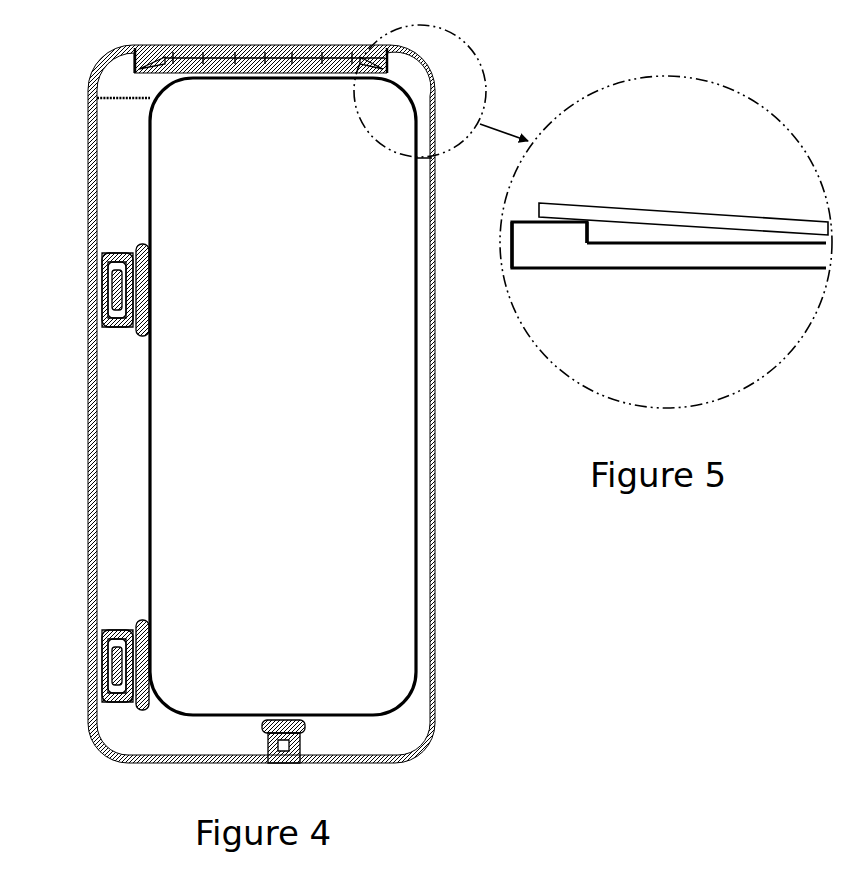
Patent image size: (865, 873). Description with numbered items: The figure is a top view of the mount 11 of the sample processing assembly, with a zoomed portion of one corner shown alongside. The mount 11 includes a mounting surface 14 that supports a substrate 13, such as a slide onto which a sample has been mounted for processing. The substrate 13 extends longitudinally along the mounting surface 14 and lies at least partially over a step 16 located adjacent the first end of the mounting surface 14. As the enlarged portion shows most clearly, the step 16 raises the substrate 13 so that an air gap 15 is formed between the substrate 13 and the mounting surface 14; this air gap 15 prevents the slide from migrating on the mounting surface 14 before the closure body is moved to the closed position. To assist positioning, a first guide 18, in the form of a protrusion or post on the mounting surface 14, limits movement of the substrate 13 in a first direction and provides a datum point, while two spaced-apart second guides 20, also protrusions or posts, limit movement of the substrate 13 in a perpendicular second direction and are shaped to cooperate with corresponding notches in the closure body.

In FIG. 4, the mount 11 is at (77, 120).
In FIG. 4, the substrate 13 is at (298, 321).
In FIG. 5, the substrate 13 is at (636, 207).
In FIG. 4, the mounting surface 14 is at (130, 203).
In FIG. 5, the mounting surface 14 is at (637, 246).
In FIG. 5, the air gap 15 is at (590, 236).
In FIG. 4, the step 16 is at (122, 72).
In FIG. 5, the step 16 is at (513, 222).
In FIG. 4, the first guide 18 is at (284, 719).
In FIG. 4, the second guides 20 is at (105, 266).